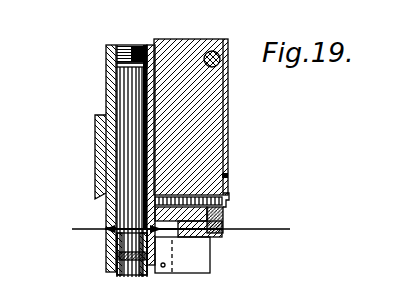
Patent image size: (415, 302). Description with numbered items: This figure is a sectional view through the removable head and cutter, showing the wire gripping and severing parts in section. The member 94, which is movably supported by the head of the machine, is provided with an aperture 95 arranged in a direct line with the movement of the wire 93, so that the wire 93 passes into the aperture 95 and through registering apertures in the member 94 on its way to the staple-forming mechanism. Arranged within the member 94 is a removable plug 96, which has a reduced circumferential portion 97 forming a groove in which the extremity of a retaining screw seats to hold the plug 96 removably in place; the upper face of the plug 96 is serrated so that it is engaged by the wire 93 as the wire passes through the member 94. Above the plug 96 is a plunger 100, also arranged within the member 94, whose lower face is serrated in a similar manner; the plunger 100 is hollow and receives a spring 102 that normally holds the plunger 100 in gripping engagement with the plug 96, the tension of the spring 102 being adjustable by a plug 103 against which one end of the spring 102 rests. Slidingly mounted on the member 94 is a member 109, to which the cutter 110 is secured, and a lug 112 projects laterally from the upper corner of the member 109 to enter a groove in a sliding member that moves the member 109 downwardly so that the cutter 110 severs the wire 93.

The wire 93 is at (72, 229).
The member 94 is at (95, 159).
The aperture 95 is at (107, 234).
The removable plug 96 is at (141, 275).
The reduced circumferential portion 97 is at (124, 257).
The plunger 100 is at (127, 85).
The spring 102 is at (127, 64).
The plug 103 is at (134, 46).
The member 109 is at (228, 120).
The cutter 110 is at (222, 222).
The lug 112 is at (221, 53).